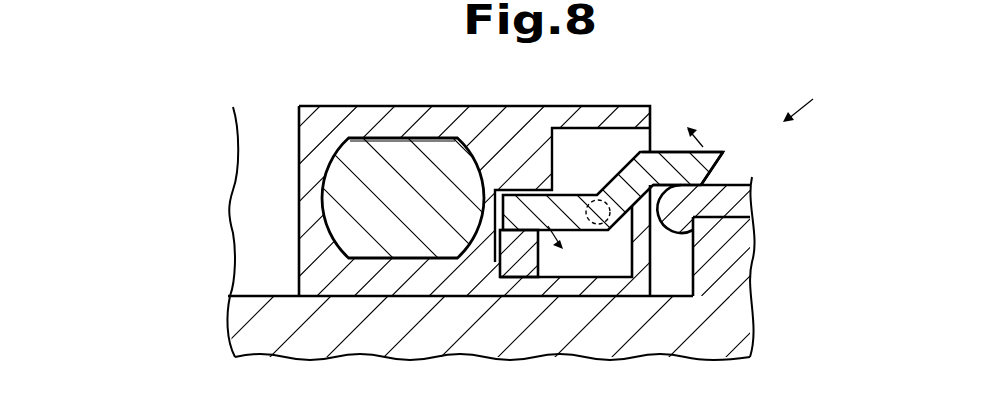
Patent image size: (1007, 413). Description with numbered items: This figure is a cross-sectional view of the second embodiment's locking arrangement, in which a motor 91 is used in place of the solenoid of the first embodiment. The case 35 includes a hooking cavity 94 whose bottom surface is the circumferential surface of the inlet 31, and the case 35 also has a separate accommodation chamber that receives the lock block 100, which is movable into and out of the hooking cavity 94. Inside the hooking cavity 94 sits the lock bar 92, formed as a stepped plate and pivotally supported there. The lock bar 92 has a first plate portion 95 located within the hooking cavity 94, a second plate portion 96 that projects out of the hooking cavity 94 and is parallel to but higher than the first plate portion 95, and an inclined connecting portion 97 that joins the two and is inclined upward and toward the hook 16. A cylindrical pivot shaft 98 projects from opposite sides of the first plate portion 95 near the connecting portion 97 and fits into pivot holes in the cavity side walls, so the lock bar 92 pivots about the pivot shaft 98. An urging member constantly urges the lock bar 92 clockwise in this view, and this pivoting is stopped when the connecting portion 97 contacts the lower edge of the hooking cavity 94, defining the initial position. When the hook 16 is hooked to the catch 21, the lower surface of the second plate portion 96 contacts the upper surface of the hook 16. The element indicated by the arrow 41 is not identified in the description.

The hook 16 is at (732, 187).
The catch 21 is at (752, 292).
The inlet 31 is at (536, 350).
The case 35 is at (520, 107).
The sealing structure 41 is at (816, 104).
The motor 91 is at (333, 178).
The lock bar 92 is at (622, 174).
The hooking cavity 94 is at (648, 136).
The first plate portion 95 is at (598, 231).
The second plate portion 96 is at (710, 152).
The connecting portion 97 is at (634, 157).
The pivot shaft 98 is at (583, 200).
The lock block 100 is at (506, 263).